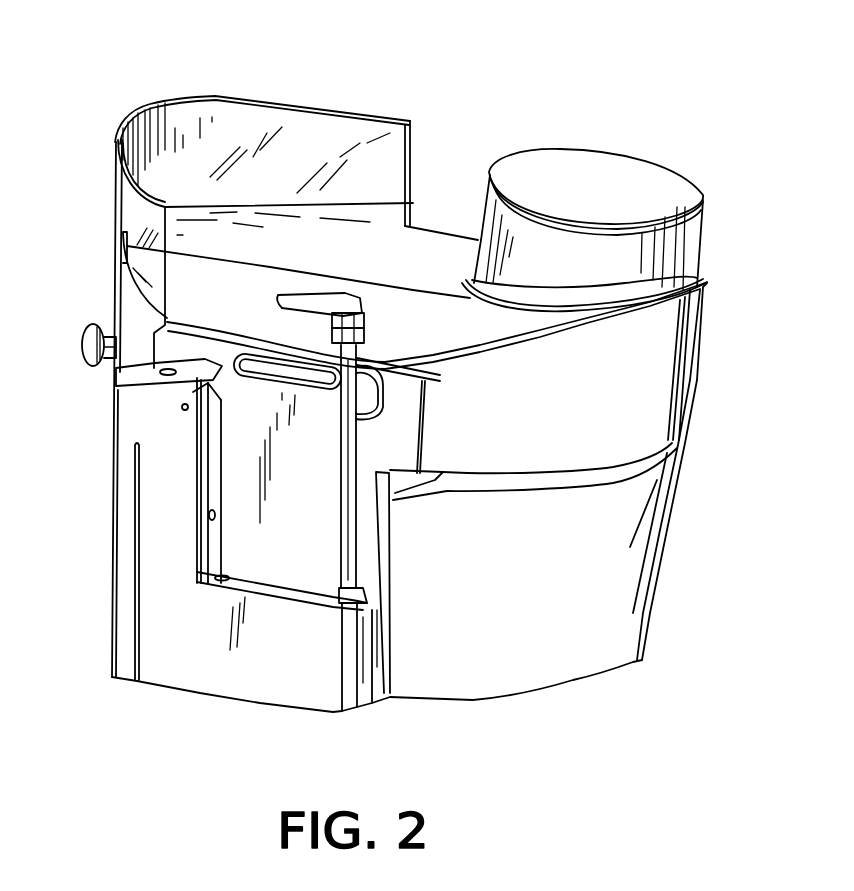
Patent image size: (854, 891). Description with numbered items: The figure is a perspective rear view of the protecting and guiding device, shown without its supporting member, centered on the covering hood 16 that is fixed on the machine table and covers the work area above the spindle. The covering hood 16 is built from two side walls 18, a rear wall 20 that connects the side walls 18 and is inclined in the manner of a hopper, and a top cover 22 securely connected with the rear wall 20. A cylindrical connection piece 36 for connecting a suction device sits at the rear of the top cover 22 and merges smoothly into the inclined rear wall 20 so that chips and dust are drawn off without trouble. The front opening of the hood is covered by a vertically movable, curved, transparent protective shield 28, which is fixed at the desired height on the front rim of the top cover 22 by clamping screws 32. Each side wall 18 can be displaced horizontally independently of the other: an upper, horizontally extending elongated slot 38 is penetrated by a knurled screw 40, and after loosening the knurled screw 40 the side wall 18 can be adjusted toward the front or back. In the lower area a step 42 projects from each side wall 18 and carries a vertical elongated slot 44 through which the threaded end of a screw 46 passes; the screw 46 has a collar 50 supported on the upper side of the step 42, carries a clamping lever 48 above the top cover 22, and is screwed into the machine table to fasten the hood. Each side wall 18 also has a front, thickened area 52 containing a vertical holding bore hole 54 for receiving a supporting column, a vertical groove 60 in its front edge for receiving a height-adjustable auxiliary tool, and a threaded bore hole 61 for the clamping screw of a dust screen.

The covering hood 16 is at (450, 122).
The side wall 18 is at (277, 560).
The rear wall 20 is at (647, 545).
The top cover 22 is at (440, 243).
The protective shield 28 is at (257, 122).
The clamping screw 32 is at (86, 326).
The connection piece 36 is at (562, 160).
The elongated slot 38 is at (318, 388).
The knurled screw 40 is at (372, 400).
The step 42 is at (292, 683).
The vertical elongated slot 44 is at (195, 576).
The screw 46 is at (343, 563).
The clamping lever 48 is at (313, 293).
The collar 50 is at (367, 597).
The thickened area 52 is at (125, 470).
The holding bore hole 54 is at (133, 382).
The vertical groove 60 is at (135, 520).
The threaded bore hole 61 is at (180, 408).